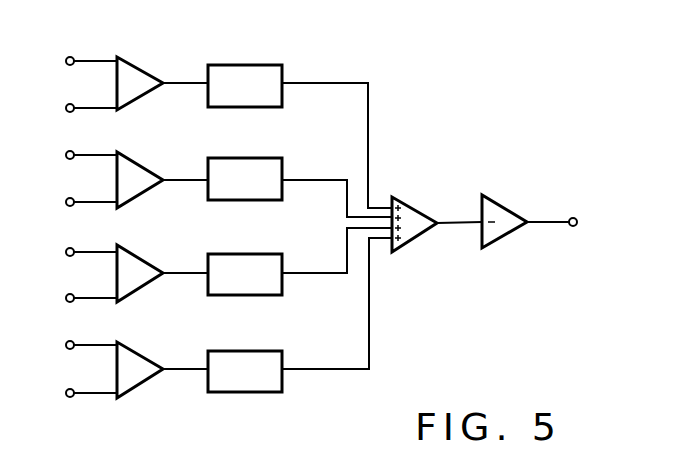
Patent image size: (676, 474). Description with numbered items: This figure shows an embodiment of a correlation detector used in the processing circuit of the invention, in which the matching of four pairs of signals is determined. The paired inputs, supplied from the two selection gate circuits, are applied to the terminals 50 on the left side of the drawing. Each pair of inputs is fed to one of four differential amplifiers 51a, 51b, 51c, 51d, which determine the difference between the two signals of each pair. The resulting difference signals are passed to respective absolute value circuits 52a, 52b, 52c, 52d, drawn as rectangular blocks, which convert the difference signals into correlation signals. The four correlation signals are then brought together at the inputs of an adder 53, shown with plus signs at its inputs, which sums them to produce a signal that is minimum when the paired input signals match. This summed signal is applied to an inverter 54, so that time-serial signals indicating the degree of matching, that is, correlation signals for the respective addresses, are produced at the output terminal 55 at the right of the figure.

The terminals 50 is at (70, 56).
The differential amplifier 51a is at (133, 70).
The differential amplifier 51b is at (135, 165).
The differential amplifier 51c is at (133, 257).
The differential amplifier 51d is at (135, 354).
The absolute value circuit 52a is at (253, 65).
The absolute value circuit 52b is at (253, 158).
The absolute value circuit 52c is at (252, 254).
The absolute value circuit 52d is at (250, 351).
The adder 53 is at (412, 202).
The inverter 54 is at (499, 198).
The terminal 55 is at (573, 217).